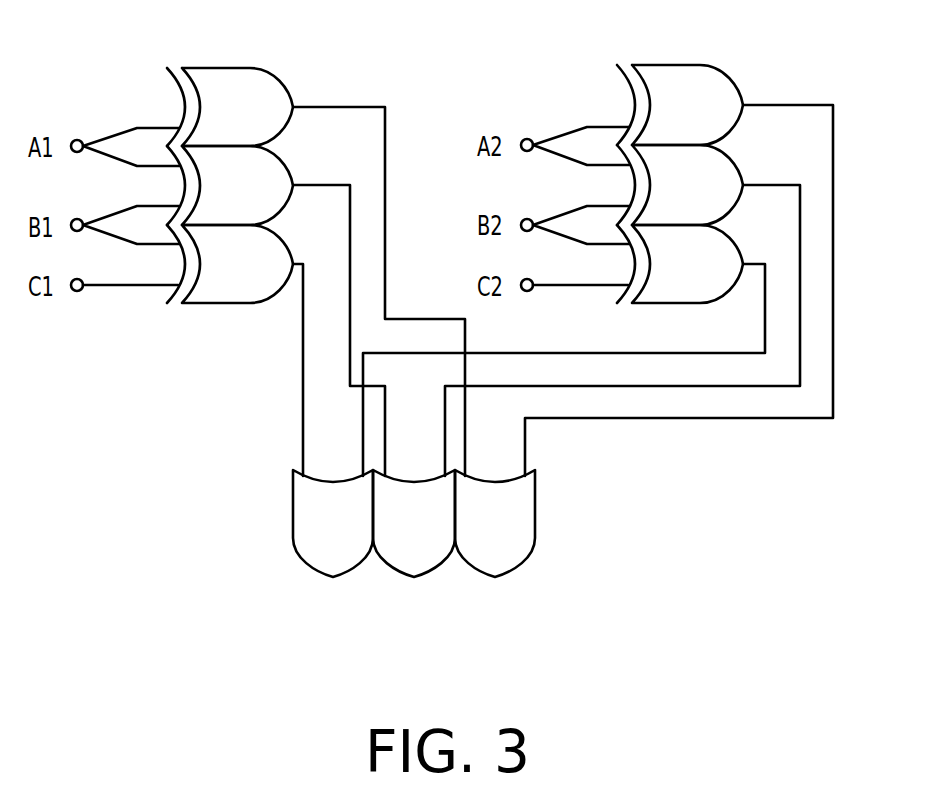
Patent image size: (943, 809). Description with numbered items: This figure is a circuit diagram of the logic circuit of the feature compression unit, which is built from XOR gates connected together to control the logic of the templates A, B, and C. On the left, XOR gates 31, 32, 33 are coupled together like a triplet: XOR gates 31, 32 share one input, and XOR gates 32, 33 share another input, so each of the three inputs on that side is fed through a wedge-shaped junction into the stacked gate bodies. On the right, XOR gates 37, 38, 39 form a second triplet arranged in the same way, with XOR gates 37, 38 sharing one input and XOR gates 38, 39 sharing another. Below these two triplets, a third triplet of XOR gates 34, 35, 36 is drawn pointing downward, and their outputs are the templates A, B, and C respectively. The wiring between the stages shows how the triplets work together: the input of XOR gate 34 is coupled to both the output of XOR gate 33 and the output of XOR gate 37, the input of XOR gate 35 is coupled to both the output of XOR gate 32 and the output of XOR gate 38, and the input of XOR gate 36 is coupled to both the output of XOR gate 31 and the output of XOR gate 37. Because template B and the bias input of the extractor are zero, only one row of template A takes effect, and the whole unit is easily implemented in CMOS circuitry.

The XOR gate 31 is at (258, 68).
The XOR gate 32 is at (283, 172).
The XOR gate 33 is at (220, 304).
The XOR gate 34 is at (293, 498).
The XOR gate 35 is at (408, 578).
The XOR gate 36 is at (536, 517).
The XOR gate 37 is at (733, 82).
The XOR gate 38 is at (737, 167).
The XOR gate 39 is at (737, 244).